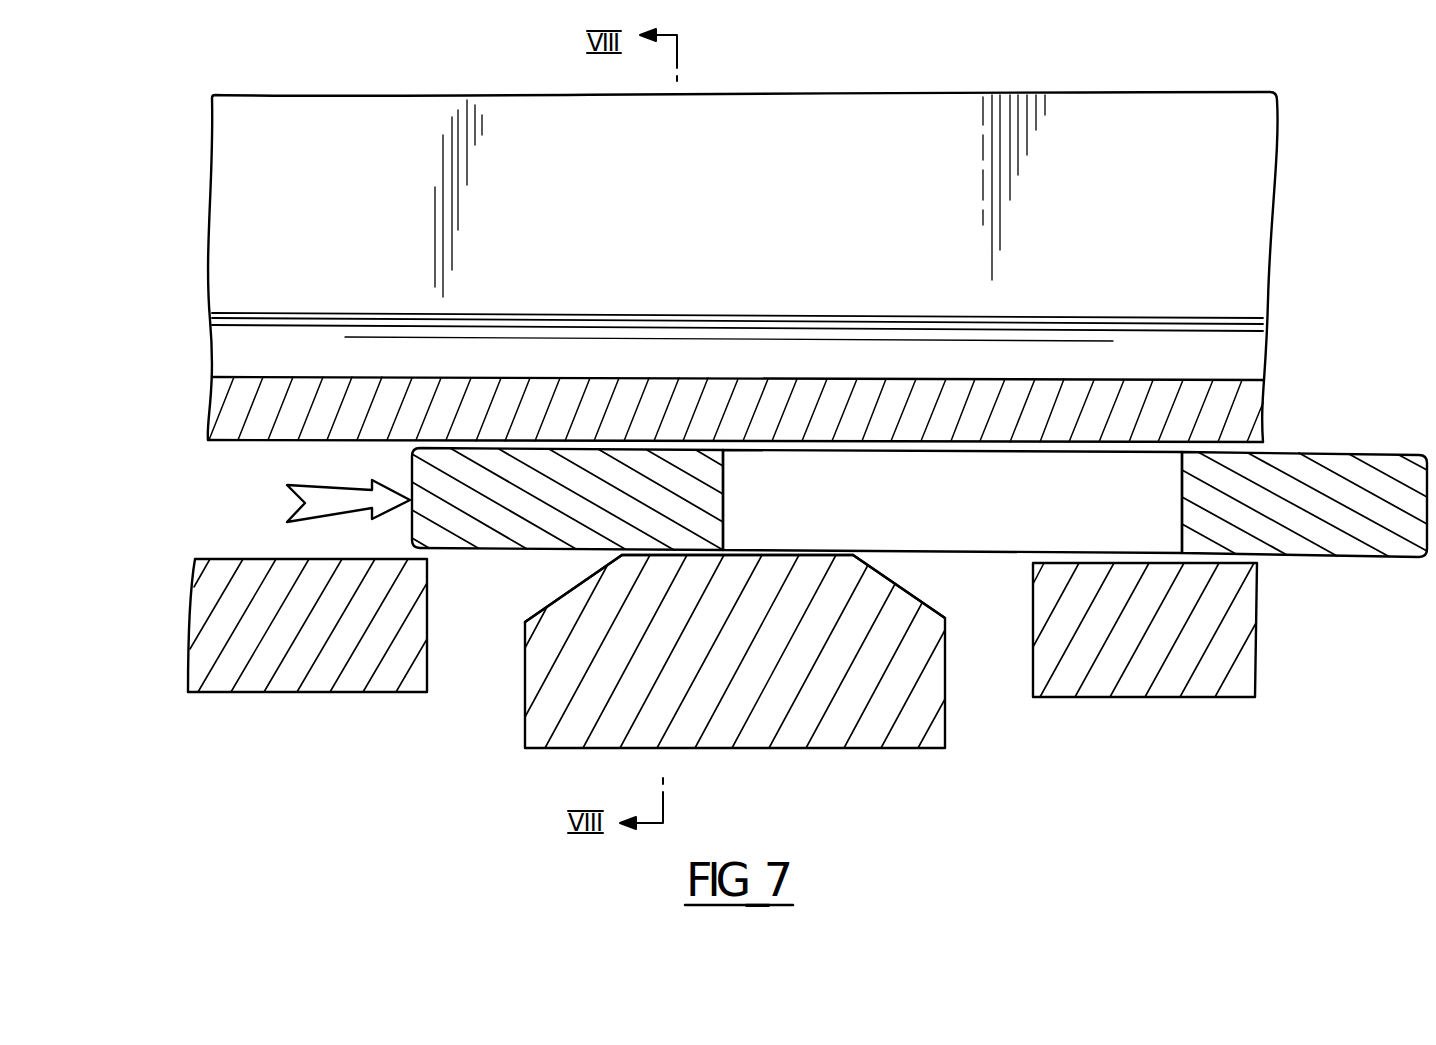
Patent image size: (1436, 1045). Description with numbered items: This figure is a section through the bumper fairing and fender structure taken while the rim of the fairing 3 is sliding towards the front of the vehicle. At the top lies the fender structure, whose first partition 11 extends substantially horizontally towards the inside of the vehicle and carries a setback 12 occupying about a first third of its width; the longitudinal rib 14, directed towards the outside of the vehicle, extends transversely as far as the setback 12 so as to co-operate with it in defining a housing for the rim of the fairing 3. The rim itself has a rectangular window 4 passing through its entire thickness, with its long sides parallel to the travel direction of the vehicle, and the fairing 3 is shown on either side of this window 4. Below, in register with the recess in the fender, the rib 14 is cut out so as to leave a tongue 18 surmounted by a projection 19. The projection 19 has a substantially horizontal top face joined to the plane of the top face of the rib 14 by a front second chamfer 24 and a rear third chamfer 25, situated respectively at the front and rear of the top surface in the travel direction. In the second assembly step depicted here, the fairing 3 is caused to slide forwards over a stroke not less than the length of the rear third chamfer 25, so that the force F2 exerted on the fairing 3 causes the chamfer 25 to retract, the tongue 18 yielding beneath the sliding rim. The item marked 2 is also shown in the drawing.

The glass sheet 2 is at (318, 185).
The setback 12 is at (281, 314).
The first partition 11 is at (265, 347).
The fairing 3 is at (1320, 485).
The rectangular window 4 is at (952, 501).
The longitudinal rib 14 is at (235, 634).
The tongue 18 is at (749, 717).
The projection 19 is at (777, 570).
The front second chamfer 24 is at (930, 592).
The rear third chamfer 25 is at (557, 598).
The force F2 is at (333, 510).